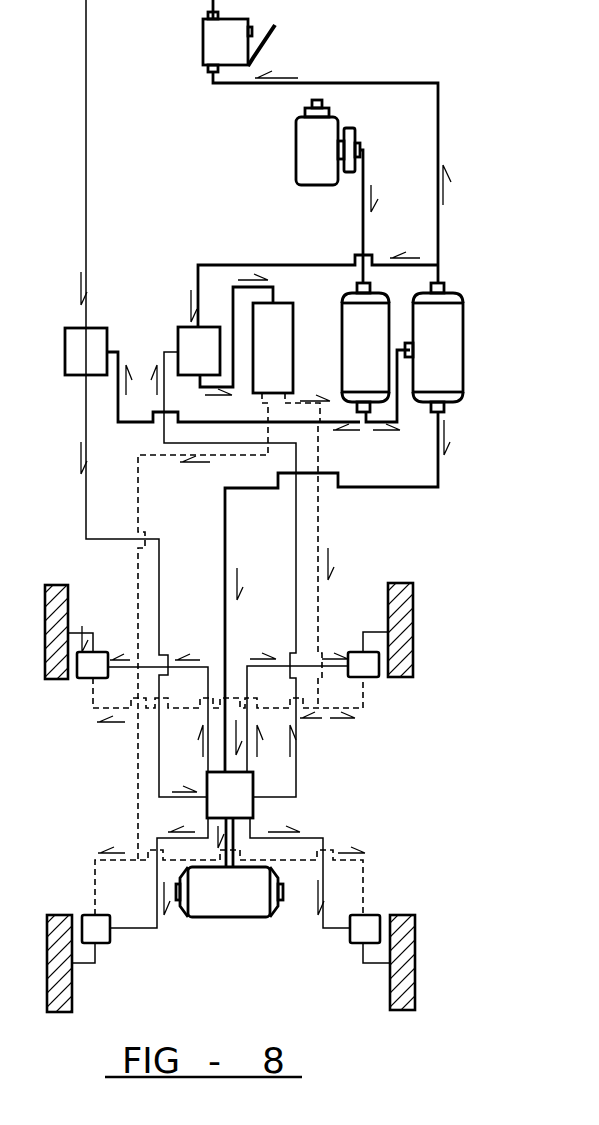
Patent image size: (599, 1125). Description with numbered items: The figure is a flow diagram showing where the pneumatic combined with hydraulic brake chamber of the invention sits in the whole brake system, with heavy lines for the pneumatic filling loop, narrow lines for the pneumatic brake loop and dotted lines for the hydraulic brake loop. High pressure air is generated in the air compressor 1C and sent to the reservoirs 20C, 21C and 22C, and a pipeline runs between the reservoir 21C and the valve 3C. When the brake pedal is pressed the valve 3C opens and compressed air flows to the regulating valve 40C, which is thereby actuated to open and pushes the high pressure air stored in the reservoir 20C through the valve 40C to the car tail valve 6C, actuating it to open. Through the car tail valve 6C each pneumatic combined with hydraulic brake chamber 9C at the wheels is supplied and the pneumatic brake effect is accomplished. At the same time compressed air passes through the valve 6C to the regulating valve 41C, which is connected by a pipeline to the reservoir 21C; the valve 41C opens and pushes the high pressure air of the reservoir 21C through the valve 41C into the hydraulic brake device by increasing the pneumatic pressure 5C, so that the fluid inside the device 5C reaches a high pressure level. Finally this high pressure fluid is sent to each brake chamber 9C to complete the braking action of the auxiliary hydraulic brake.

The valve 3C is at (239, 42).
The air compressor 1C is at (328, 142).
The regulating valve 40C is at (86, 351).
The regulating valve 41C is at (199, 351).
The hydraulic brake device by increasing the pneumatic pressure 5C is at (273, 348).
The reservoir 20C is at (365, 347).
The reservoir 21C is at (434, 347).
The pneumatic combined with hydraulic brake chamber 9C is at (228, 797).
The car tail valve 6C is at (230, 795).
The reservoir 22C is at (229, 892).